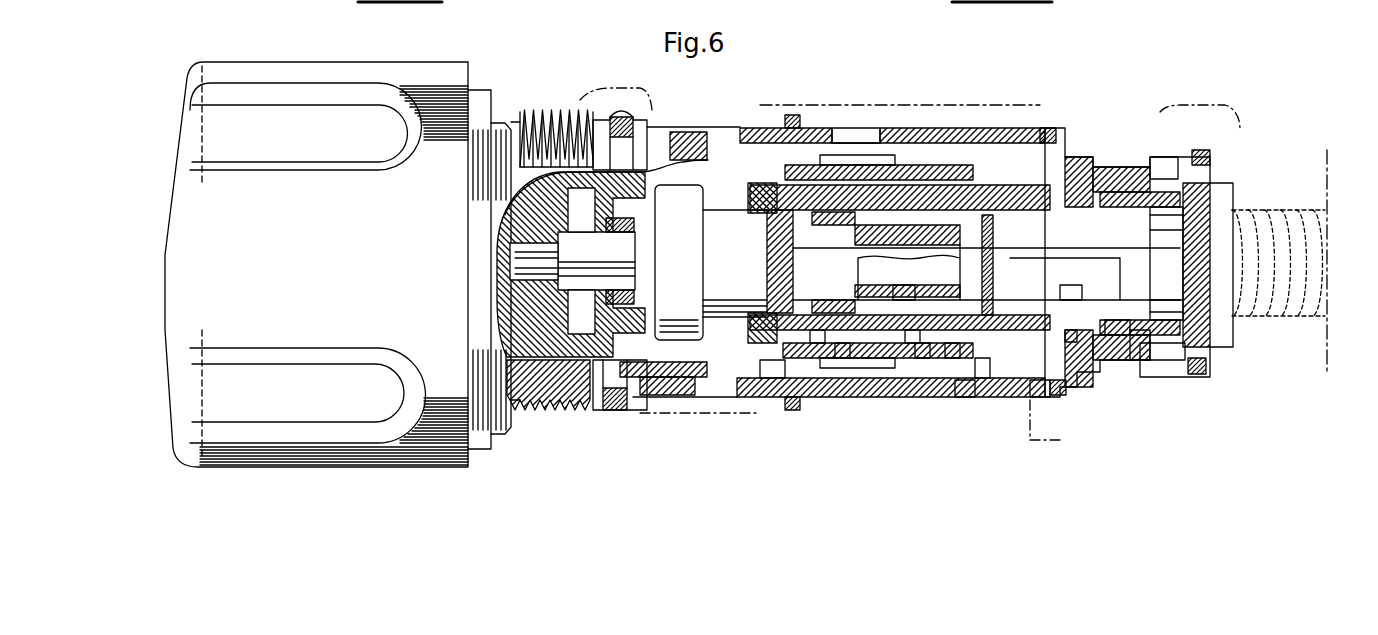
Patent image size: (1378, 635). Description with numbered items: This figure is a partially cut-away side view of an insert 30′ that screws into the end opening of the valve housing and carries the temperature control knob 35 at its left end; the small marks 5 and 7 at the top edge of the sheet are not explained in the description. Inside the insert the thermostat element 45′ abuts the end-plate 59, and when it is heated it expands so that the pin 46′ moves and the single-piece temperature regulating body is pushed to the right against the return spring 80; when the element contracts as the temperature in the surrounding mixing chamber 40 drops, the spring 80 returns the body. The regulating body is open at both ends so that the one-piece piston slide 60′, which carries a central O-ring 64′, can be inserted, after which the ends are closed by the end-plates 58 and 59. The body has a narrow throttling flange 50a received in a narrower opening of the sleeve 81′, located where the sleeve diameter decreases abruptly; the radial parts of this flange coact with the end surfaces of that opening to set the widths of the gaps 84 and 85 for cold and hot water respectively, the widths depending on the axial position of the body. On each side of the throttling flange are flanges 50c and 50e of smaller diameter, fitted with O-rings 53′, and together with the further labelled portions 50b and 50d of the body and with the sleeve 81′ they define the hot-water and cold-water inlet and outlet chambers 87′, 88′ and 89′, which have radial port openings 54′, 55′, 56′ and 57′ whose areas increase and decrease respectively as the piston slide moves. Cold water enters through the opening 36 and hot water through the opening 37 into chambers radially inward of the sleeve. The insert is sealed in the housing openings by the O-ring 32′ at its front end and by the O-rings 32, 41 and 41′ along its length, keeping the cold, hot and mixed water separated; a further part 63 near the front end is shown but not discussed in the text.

The adjacent figure fragment 5 is at (420, 3).
The adjacent figure fragment 7 is at (1000, 3).
The temperature control knob 35 is at (304, 76).
The pin 46′ is at (497, 258).
The O-ring 41′ is at (618, 112).
The thermostat element 45′ is at (706, 182).
The end-plate 59 is at (778, 253).
The insert 30′ is at (841, 126).
The opening 36 is at (862, 137).
The central O-ring 64′ is at (972, 212).
The sleeve 81′ is at (867, 350).
The piston slide 60′ is at (901, 246).
The O-ring 32 is at (1048, 128).
The O-ring 41 is at (780, 114).
The end body 63 is at (1086, 200).
The end-plate 58 is at (1213, 293).
The O-ring 32′ is at (1199, 150).
The mixing chamber 40 is at (1183, 362).
The spring 80 is at (1270, 205).
The passage 50d is at (1153, 160).
The flange 50e is at (1213, 347).
The radial port opening 56′ is at (1157, 363).
The opening 37 is at (1150, 367).
The flange 50c is at (1130, 330).
The radial port opening 57′ is at (1073, 338).
The inlet/outlet chamber 89′ is at (1054, 400).
The passage 50b is at (1045, 402).
The throttling flange 50a is at (966, 400).
The gap 85 is at (982, 367).
The gap 84 is at (953, 350).
The radial port opening 55′ is at (915, 345).
The radial port opening 54′ is at (843, 365).
The O-ring 53′ is at (768, 385).
The inlet/outlet chamber 87′ is at (817, 350).
The inlet/outlet chamber 88′ is at (923, 360).